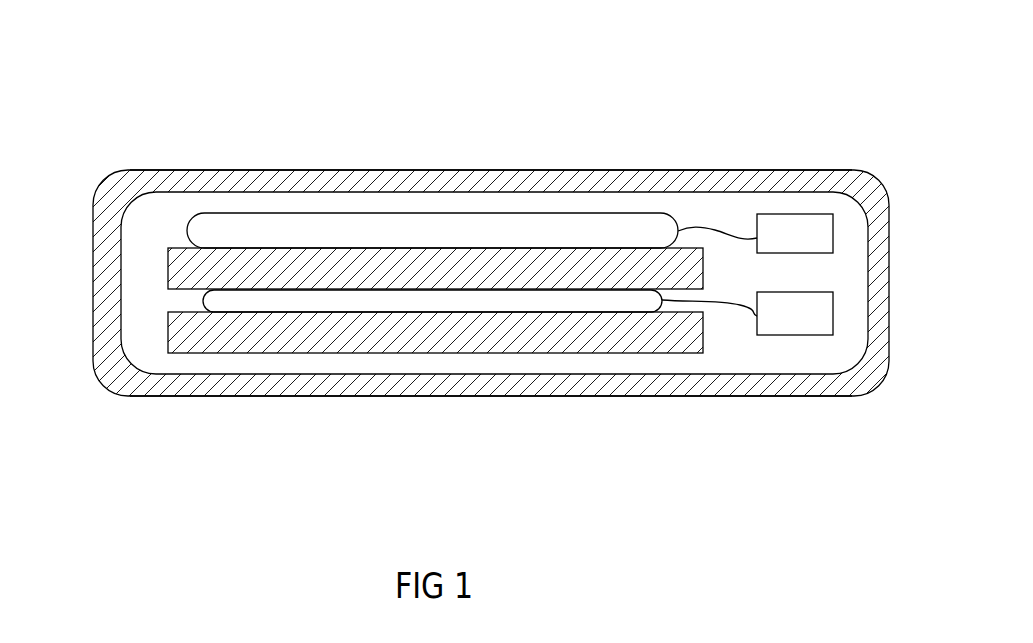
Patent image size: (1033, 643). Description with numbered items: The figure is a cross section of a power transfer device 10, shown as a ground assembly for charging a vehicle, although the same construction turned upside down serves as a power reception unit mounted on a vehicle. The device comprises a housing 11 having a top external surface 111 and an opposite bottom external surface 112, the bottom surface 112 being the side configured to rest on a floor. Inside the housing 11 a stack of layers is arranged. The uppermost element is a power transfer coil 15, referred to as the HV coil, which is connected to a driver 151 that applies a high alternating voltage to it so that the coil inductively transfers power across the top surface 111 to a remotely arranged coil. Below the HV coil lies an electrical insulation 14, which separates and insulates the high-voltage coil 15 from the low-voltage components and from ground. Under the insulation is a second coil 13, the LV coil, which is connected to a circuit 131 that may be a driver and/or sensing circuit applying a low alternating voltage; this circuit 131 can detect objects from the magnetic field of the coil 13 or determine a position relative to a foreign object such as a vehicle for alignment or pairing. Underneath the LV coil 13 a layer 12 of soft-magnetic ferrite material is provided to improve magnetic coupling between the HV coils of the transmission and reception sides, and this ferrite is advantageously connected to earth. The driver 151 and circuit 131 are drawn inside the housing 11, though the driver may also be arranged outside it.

The power transfer device 10 is at (190, 66).
The housing 11 is at (735, 168).
The top external surface 111 is at (600, 160).
The bottom external surface 112 is at (547, 406).
The layer of ferrite material 12 is at (250, 333).
The second coil 13 is at (345, 300).
The electrical insulation 14 is at (250, 267).
The power transfer coil 15 is at (400, 232).
The driver 151 is at (798, 213).
The circuit 131 is at (798, 335).